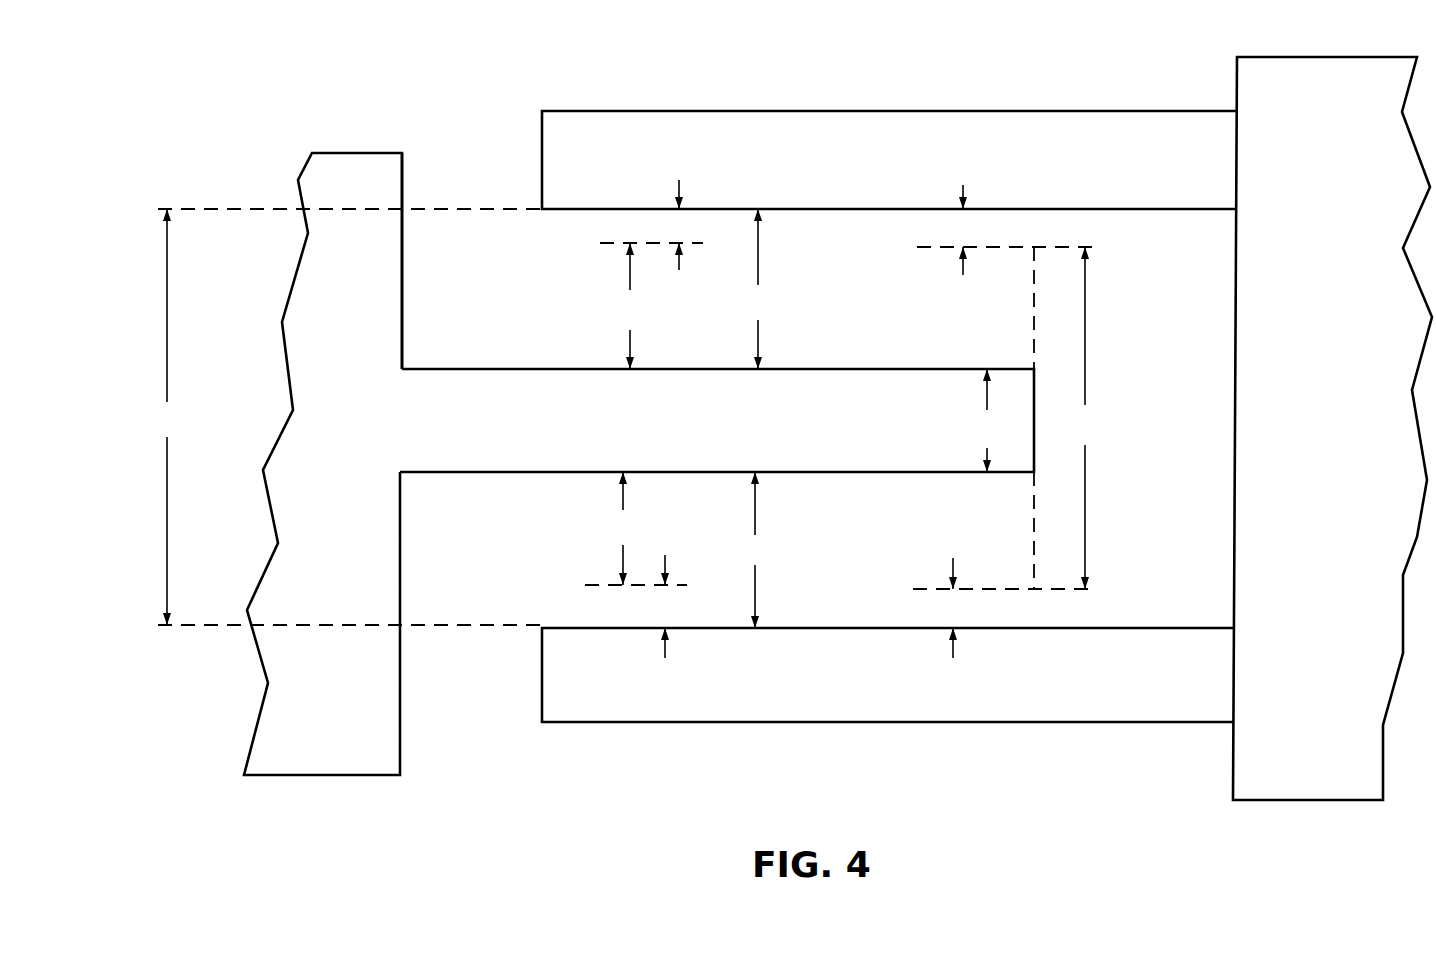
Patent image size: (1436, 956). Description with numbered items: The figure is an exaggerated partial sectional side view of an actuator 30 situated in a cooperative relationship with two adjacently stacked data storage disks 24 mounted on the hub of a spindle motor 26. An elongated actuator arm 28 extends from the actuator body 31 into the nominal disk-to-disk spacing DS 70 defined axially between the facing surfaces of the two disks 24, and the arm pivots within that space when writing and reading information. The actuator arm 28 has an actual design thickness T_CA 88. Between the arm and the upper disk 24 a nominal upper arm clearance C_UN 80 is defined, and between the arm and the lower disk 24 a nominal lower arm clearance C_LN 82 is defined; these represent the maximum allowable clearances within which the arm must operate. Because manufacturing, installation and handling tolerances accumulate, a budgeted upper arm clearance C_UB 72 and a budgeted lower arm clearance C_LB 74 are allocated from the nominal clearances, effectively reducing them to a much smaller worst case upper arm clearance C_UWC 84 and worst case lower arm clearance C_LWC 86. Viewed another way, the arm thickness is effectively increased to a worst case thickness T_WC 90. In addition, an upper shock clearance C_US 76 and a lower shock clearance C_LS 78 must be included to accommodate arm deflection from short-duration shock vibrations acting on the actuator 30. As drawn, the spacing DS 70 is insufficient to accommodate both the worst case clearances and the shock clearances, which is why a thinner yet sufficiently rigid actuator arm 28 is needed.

The data storage disk 24 is at (834, 178).
The spindle motor 26 is at (1325, 346).
The actuator arm 28 is at (490, 438).
The actuator 30 is at (312, 775).
The actuator body 31 is at (403, 276).
The disk-to-disk spacing DS 70 is at (155, 422).
The budgeted upper arm clearance C_UB 72 is at (618, 318).
The budgeted lower arm clearance C_LB 74 is at (603, 522).
The upper shock clearance C_US 76 is at (655, 227).
The lower shock clearance C_LS 78 is at (647, 603).
The nominal upper arm clearance C_UN 80 is at (766, 291).
The nominal lower arm clearance C_LN 82 is at (768, 541).
The worst case upper arm clearance C_UWC 84 is at (937, 229).
The worst case lower arm clearance C_LWC 86 is at (935, 605).
The actuator arm thickness T_CA 88 is at (966, 425).
The worst case thickness T_WC 90 is at (1097, 418).